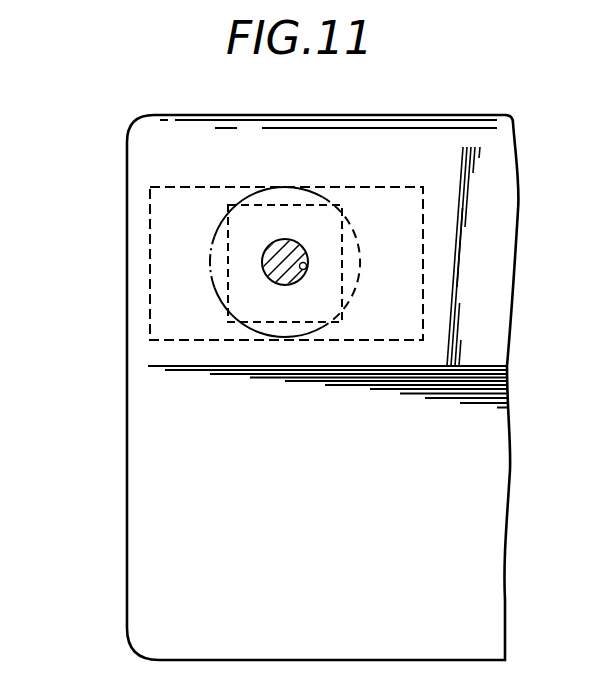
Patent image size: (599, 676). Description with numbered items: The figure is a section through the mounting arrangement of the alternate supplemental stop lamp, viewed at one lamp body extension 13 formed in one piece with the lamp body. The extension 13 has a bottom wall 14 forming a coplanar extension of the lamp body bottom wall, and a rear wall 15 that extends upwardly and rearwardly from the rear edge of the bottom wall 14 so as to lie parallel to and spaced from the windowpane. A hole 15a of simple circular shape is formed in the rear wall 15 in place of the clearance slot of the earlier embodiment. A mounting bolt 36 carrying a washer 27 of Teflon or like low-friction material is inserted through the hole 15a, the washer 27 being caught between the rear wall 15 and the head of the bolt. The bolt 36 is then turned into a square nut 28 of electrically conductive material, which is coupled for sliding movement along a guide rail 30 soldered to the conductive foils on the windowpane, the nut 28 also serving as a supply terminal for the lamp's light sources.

The lamp body extension 13 is at (127, 277).
The bottom wall 14 is at (167, 460).
The rear wall 15 is at (378, 170).
The hole 15a is at (306, 273).
The washer 27 is at (210, 282).
The square nut 28 is at (253, 205).
The guide rail 30 is at (190, 187).
The mounting bolt 36 is at (289, 240).